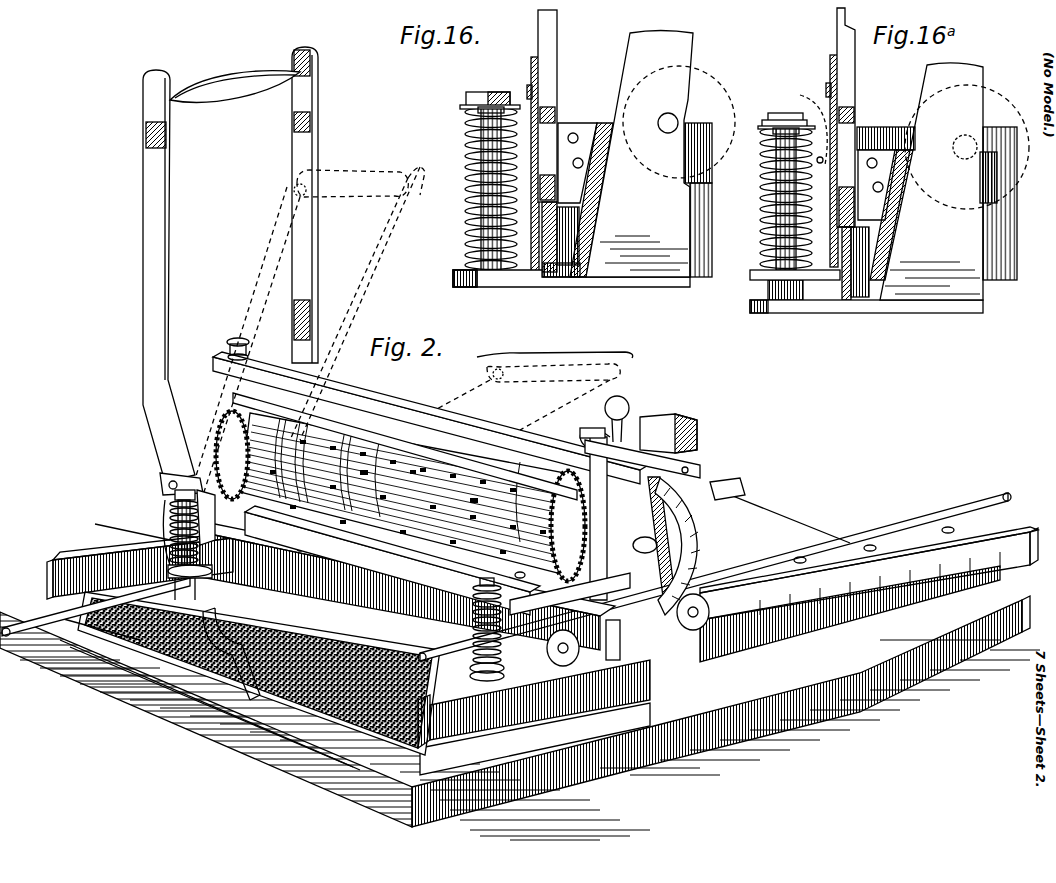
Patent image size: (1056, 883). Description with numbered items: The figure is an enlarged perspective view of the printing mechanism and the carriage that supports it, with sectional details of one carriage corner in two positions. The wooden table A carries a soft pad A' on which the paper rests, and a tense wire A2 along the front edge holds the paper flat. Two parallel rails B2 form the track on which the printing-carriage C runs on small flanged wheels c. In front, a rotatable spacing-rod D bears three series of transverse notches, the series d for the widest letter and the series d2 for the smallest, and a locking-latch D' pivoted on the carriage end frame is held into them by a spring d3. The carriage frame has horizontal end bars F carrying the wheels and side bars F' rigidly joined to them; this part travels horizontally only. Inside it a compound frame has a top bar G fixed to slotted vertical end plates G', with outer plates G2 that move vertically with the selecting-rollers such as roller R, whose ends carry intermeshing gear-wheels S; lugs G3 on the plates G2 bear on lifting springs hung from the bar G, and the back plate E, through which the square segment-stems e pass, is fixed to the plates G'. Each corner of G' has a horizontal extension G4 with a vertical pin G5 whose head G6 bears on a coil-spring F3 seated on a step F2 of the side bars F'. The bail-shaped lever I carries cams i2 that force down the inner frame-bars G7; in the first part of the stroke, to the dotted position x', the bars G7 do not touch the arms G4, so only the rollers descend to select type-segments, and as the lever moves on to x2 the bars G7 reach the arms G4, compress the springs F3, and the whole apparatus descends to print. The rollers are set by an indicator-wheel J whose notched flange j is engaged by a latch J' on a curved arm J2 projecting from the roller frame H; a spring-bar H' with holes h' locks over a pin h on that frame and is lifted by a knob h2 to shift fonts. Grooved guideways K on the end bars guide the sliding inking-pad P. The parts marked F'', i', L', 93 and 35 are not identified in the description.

In FIG. 2, the table A is at (520, 663).
In FIG. 2, the pad A' is at (410, 652).
In FIG. 2, the tense wire A2 is at (317, 787).
In FIG. 2, the rails B2 is at (52, 560).
In FIG. 2, the printing-carriage C is at (555, 345).
In FIG. 2, the spacing-rod D is at (259, 673).
In FIG. 2, the locking-latch D' is at (605, 546).
In FIG. 2, the back plate E is at (407, 587).
In FIG. 2, the operating-stem e is at (446, 594).
In FIG. 2, the end bars F is at (628, 630).
In FIG. 16, the end bars F is at (654, 246).
In FIG. 16A, the end bars F is at (937, 202).
In FIG. 16, the side bars F' is at (554, 163).
In FIG. 16A, the side bars F' is at (811, 128).
In FIG. 16, the slanted plate F'' is at (587, 200).
In FIG. 16A, the slanted plate F'' is at (891, 215).
In FIG. 16, the step F2 is at (460, 272).
In FIG. 16A, the step F2 is at (750, 276).
In FIG. 2, the coil-spring F3 is at (176, 525).
In FIG. 16, the coil-spring F3 is at (466, 122).
In FIG. 16A, the coil-spring F3 is at (762, 165).
In FIG. 2, the top bar G is at (405, 438).
In FIG. 2, the end plates G' is at (413, 500).
In FIG. 16, the end plates G' is at (639, 154).
In FIG. 16A, the end plates G' is at (931, 181).
In FIG. 2, the vertical plates G2 is at (648, 537).
In FIG. 16, the vertical plates G2 is at (612, 118).
In FIG. 16A, the vertical plates G2 is at (1000, 180).
In FIG. 2, the lugs G3 is at (235, 380).
In FIG. 2, the horizontal extension G4 is at (505, 690).
In FIG. 16, the horizontal extension G4 is at (470, 287).
In FIG. 16A, the horizontal extension G4 is at (786, 313).
In FIG. 2, the vertical pin G5 is at (442, 556).
In FIG. 16, the vertical pin G5 is at (466, 222).
In FIG. 16A, the vertical pin G5 is at (762, 246).
In FIG. 2, the head G6 is at (174, 494).
In FIG. 16, the head G6 is at (472, 92).
In FIG. 16A, the head G6 is at (788, 113).
In FIG. 2, the frame-bars G7 is at (470, 600).
In FIG. 16, the frame-bars G7 is at (555, 237).
In FIG. 16A, the frame-bars G7 is at (850, 300).
In FIG. 2, the frame H is at (423, 418).
In FIG. 2, the spring-bar H' is at (402, 492).
In FIG. 2, the pin h is at (407, 455).
In FIG. 2, the holes h' is at (419, 486).
In FIG. 2, the knob h2 is at (598, 419).
In FIG. 2, the bail-shaped lever I is at (285, 134).
In FIG. 16, the bail-shaped lever I is at (557, 51).
In FIG. 16A, the bail-shaped lever I is at (855, 71).
In FIG. 2, the pivot pin i' is at (287, 512).
In FIG. 16A, the pivot pin i' is at (817, 168).
In FIG. 2, the cams i2 is at (206, 517).
In FIG. 16, the cams i2 is at (568, 224).
In FIG. 16A, the cams i2 is at (862, 250).
In FIG. 2, the indicator-wheel J is at (654, 491).
In FIG. 2, the locking-latch J' is at (668, 425).
In FIG. 2, the curved arm J2 is at (580, 435).
In FIG. 2, the notched flange j is at (694, 477).
In FIG. 2, the guideways K is at (680, 752).
In FIG. 2, the bar L' is at (392, 560).
In FIG. 2, the inking-pad P is at (200, 654).
In FIG. 16, the selecting-roller R is at (679, 122).
In FIG. 16A, the selecting-roller R is at (967, 147).
In FIG. 2, the gear-wheels S is at (400, 496).
In FIG. 2, the flanged wheels c is at (168, 512).
In FIG. 2, the notches d is at (843, 530).
In FIG. 2, the notches d2 is at (743, 555).
In FIG. 2, the spring d3 is at (517, 567).
In FIG. 2, the dotted position x' is at (307, 320).
In FIG. 2, the lever position x2 is at (540, 397).
In FIG. 2, the knob 93 is at (235, 340).
In FIG. 2, the rod 35 is at (30, 626).